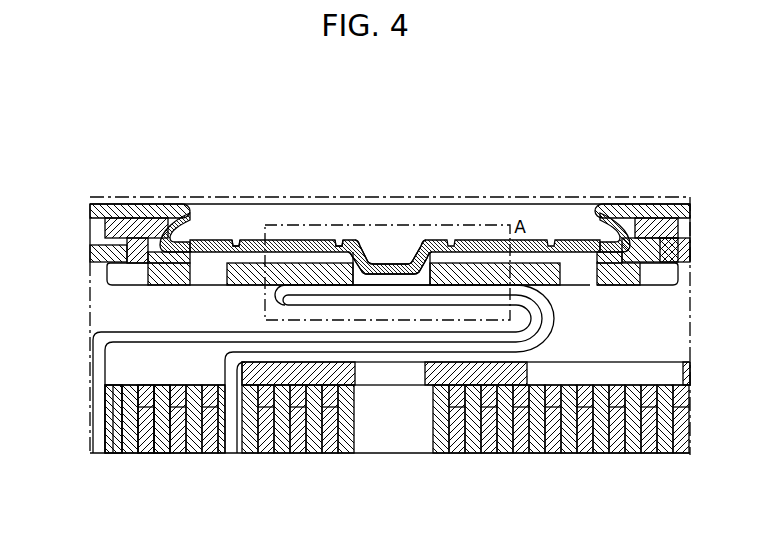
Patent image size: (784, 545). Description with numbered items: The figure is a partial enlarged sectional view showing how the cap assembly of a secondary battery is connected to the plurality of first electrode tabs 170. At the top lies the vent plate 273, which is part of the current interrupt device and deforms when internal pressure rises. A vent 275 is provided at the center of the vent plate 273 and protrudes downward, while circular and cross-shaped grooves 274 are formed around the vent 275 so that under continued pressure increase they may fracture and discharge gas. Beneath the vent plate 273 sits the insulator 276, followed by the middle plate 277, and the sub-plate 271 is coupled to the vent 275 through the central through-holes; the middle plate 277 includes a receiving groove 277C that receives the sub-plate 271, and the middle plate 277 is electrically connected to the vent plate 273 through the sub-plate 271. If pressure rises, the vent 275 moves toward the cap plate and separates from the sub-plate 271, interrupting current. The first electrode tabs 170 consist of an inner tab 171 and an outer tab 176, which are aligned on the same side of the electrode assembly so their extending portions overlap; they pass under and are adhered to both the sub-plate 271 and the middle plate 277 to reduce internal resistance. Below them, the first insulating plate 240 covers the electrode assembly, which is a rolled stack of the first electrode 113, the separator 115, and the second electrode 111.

The vent plate 273 is at (120, 205).
The grooves 274 is at (238, 238).
The vent 275 is at (393, 255).
The receiving groove 277C is at (473, 262).
The insulator 276 is at (110, 231).
The middle plate 277 is at (118, 282).
The sub-plate 271 is at (300, 288).
The first electrode tabs 170 is at (386, 279).
The inner tab 171 is at (544, 316).
The outer tab 176 is at (581, 319).
The first insulating plate 240 is at (360, 376).
The second electrode 111 is at (137, 455).
The separator 115 is at (113, 455).
The first electrode 113 is at (160, 455).